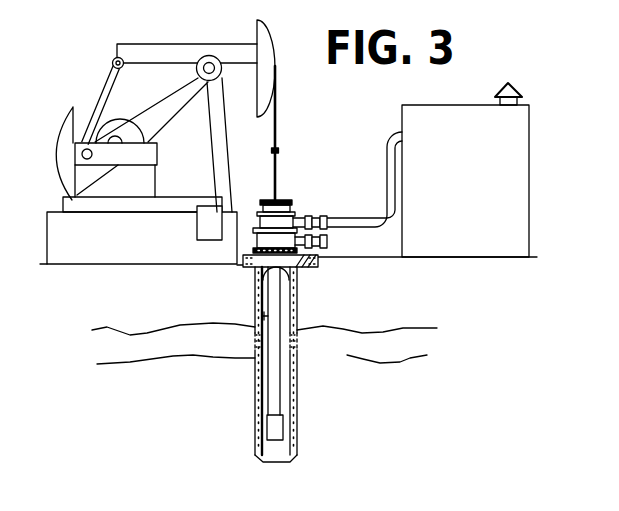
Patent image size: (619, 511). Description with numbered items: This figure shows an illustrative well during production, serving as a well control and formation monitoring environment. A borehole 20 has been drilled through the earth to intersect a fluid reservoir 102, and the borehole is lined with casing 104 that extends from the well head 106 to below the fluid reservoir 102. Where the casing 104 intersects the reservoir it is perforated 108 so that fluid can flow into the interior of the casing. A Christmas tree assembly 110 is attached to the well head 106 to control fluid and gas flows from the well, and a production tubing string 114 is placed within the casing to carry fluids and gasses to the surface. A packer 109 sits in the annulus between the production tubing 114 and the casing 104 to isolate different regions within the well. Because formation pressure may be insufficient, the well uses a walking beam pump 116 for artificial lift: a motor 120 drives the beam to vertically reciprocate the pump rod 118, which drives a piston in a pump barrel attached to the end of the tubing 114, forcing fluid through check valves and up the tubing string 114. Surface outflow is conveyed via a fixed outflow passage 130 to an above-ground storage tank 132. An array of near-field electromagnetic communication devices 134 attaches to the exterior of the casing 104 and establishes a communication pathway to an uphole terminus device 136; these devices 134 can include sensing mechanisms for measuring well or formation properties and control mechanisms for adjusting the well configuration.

The borehole 20 is at (276, 364).
The fluid reservoir 102 is at (222, 352).
The casing 104 is at (262, 273).
The well head 106 is at (303, 263).
The perforations 108 is at (297, 348).
The packer 109 is at (262, 316).
The Christmas tree assembly 110 is at (267, 206).
The production tubing string 114 is at (282, 272).
The walking beam pump 116 is at (114, 56).
The pump rod 118 is at (273, 179).
The motor 120 is at (113, 118).
The fixed outflow passage 130 is at (368, 219).
The above-ground storage tank 132 is at (438, 258).
The near-field electromagnetic communication devices 134 is at (327, 241).
The uphole terminus device 136 is at (198, 232).